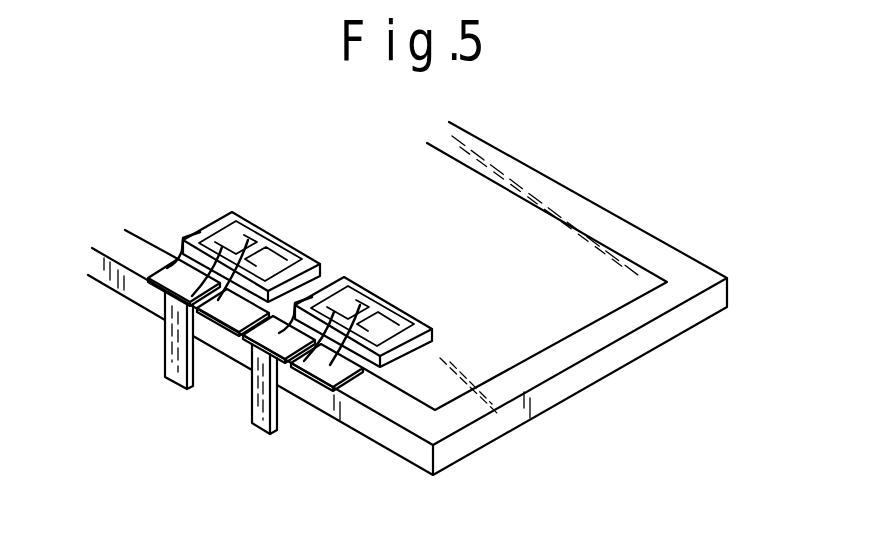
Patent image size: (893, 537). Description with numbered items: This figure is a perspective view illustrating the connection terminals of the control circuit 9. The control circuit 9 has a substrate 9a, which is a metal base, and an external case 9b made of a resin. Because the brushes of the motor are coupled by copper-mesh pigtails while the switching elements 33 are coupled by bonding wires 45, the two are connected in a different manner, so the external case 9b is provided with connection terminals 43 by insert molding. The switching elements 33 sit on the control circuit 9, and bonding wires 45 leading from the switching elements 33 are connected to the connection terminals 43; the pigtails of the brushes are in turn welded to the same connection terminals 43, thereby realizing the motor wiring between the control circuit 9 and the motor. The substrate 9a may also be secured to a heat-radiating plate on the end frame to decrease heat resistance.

The control circuit 9 is at (528, 150).
The substrate 9a is at (553, 323).
The external case 9b is at (617, 231).
The switching elements 33 is at (258, 222).
The bonding wires 45 is at (197, 233).
The connection terminals 43 is at (178, 370).